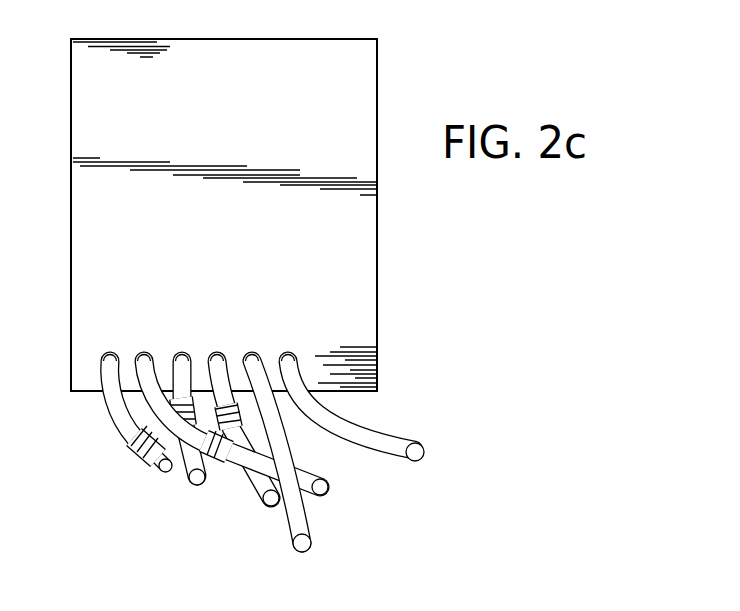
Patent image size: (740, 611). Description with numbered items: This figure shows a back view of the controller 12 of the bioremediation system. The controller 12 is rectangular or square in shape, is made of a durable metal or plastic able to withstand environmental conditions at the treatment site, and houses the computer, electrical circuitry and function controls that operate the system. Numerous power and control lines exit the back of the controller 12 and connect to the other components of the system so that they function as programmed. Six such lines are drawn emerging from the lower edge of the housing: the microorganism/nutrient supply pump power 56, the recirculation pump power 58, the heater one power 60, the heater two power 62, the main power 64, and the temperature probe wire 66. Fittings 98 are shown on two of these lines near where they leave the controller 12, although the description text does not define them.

The controller 12 is at (251, 53).
The microorganism/nutrient supply pump power 56 is at (115, 400).
The recirculation pump power 58 is at (325, 486).
The heater #1 power 60 is at (193, 478).
The heater #2 power 62 is at (220, 367).
The main power 64 is at (255, 368).
The temperature probe wire 66 is at (423, 450).
The connector 98 is at (137, 447).